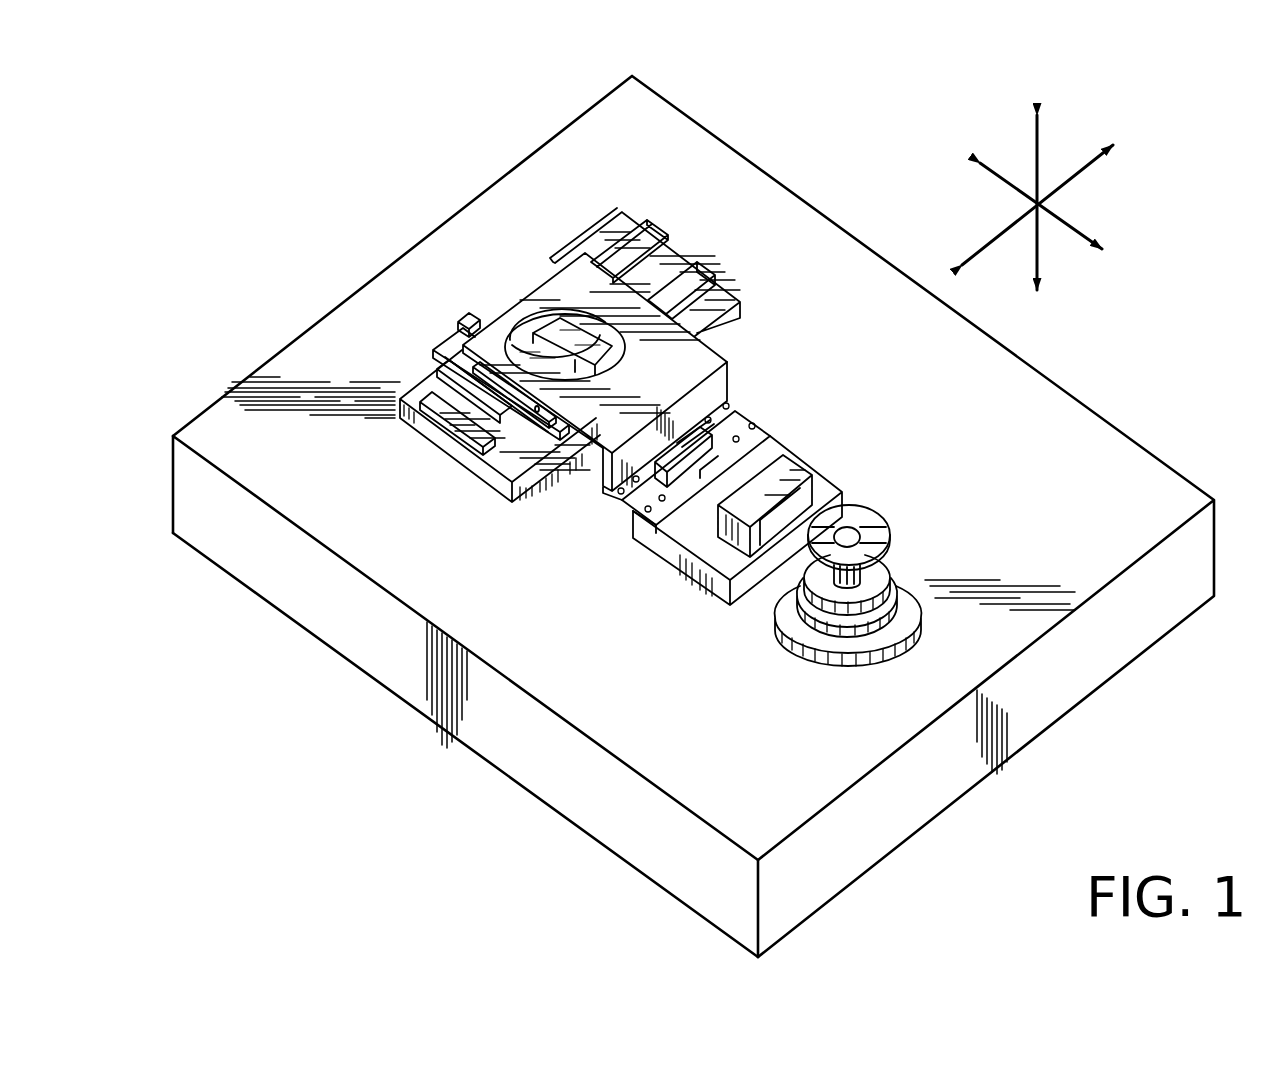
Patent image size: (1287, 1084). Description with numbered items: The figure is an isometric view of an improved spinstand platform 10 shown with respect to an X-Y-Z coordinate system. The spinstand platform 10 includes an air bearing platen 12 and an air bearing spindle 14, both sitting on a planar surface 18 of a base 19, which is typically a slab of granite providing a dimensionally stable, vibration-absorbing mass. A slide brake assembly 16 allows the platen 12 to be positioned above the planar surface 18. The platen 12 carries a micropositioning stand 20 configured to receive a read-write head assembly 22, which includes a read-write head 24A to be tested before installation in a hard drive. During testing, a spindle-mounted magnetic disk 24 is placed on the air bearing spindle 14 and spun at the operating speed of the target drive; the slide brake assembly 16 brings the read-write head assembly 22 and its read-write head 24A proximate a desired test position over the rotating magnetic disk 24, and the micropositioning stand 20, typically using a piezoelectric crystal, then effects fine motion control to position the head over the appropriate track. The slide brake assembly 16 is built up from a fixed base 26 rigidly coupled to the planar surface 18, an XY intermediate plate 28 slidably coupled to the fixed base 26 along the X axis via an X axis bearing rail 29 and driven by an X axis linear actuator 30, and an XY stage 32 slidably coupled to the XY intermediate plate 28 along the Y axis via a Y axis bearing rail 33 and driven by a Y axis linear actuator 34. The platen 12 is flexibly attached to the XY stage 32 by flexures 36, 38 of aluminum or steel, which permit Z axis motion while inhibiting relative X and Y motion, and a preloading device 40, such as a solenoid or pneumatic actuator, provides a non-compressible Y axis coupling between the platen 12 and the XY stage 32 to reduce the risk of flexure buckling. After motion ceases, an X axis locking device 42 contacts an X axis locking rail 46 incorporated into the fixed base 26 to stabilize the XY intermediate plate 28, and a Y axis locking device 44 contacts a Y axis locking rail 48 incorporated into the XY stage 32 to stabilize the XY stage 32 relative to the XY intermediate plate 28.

The spinstand platform 10 is at (152, 156).
The air bearing platen 12 is at (708, 578).
The air bearing spindle 14 is at (913, 563).
The slide brake assembly 16 is at (280, 450).
The planar surface 18 is at (410, 582).
The base 19 is at (545, 777).
The micropositioning stand 20 is at (812, 455).
The read-write head assembly 22 is at (755, 520).
The magnetic disk 24 is at (884, 509).
The read-write head 24A is at (800, 585).
The fixed base 26 is at (455, 471).
The XY intermediate plate 28 is at (428, 338).
The X axis bearing rail 29 is at (722, 258).
The X axis linear actuator 30 is at (608, 215).
The XY stage 32 is at (727, 385).
The Y axis bearing rail 33 is at (462, 322).
The Y axis linear actuator 34 is at (538, 399).
The flexure 36 is at (627, 512).
The flexure 38 is at (750, 408).
The preloading device 40 is at (690, 457).
The X axis locking device 42 is at (535, 340).
The Y axis locking device 44 is at (590, 340).
The X axis locking rail 46 is at (672, 223).
The Y axis locking rail 48 is at (524, 328).